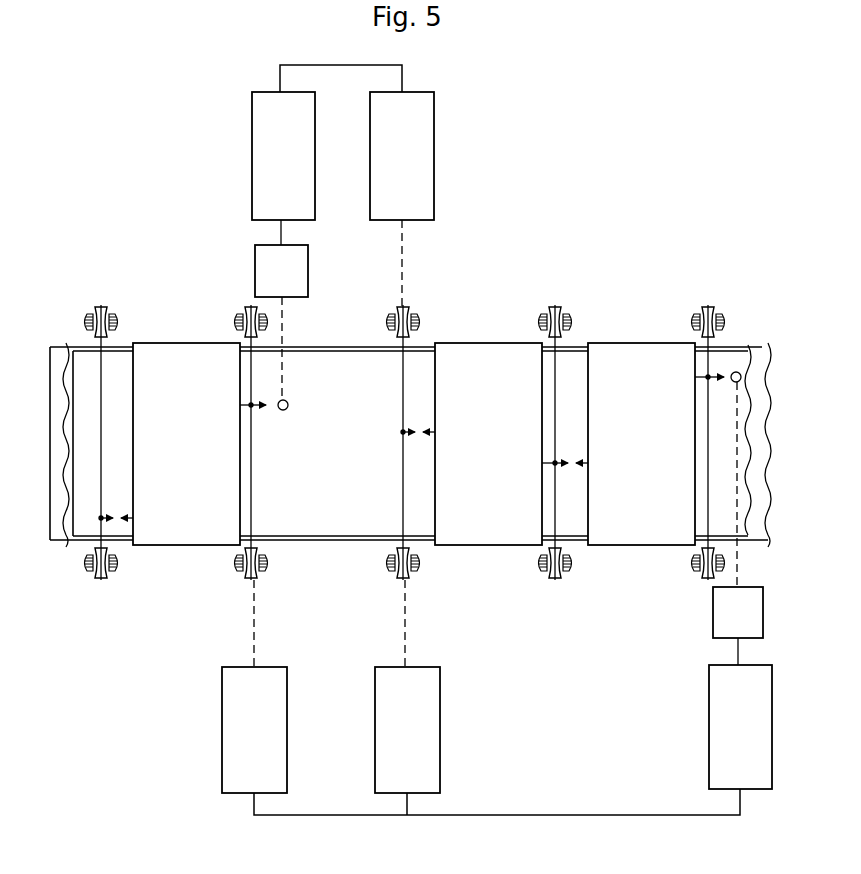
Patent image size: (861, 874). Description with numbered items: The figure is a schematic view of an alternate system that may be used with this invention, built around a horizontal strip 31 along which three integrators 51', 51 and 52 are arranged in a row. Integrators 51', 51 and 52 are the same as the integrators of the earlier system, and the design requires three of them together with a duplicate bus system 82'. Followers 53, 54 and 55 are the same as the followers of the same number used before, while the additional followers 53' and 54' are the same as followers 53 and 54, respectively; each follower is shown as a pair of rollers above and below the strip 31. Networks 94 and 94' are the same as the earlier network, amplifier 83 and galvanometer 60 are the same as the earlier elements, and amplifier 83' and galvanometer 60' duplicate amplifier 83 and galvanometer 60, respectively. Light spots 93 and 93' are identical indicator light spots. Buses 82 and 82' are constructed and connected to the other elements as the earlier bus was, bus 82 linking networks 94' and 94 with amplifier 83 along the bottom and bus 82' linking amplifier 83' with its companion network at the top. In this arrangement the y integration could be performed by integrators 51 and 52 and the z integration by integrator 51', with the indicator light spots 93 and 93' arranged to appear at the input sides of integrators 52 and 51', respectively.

The tube / strand 31 is at (339, 468).
The integrator 51' is at (186, 444).
The integrator 51 is at (488, 444).
The integrator 52 is at (641, 444).
The follower 53' is at (98, 425).
The follower 54' is at (240, 425).
The follower 53 is at (415, 425).
The follower 54 is at (563, 424).
The follower 55 is at (705, 306).
The light spot 93' is at (307, 353).
The light spot 93 is at (726, 469).
The galvanometer 60' is at (281, 271).
The galvanometer 60 is at (738, 626).
The amplifier 83' is at (283, 168).
The amplifier 83 is at (740, 727).
The network 94' is at (254, 686).
The network 94 is at (407, 686).
The bus 82' is at (369, 74).
The bus 82 is at (497, 798).